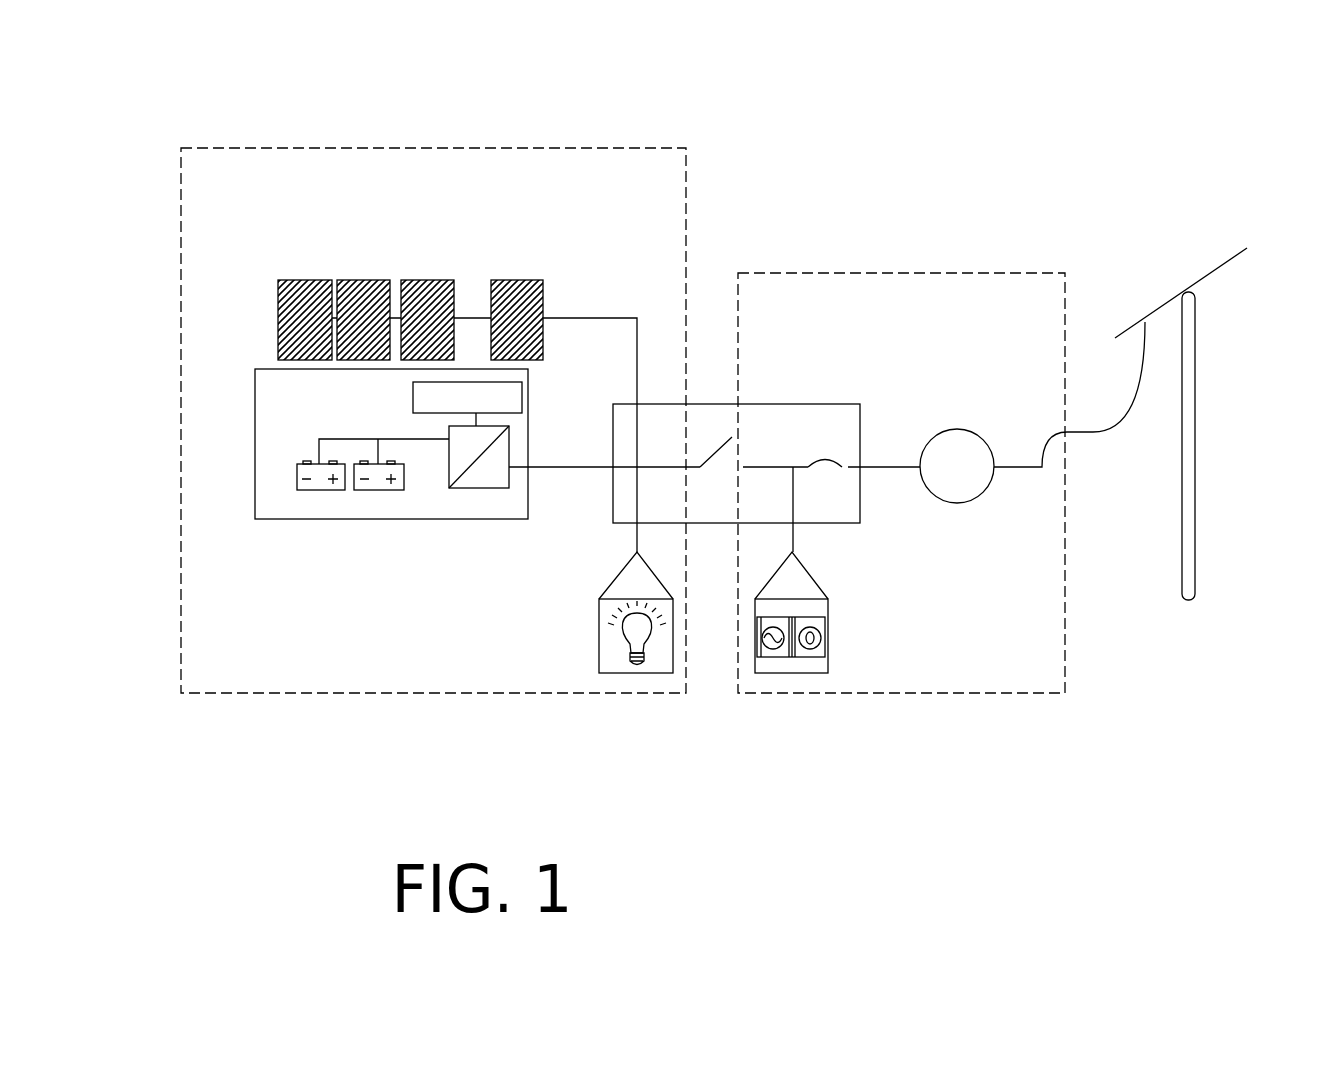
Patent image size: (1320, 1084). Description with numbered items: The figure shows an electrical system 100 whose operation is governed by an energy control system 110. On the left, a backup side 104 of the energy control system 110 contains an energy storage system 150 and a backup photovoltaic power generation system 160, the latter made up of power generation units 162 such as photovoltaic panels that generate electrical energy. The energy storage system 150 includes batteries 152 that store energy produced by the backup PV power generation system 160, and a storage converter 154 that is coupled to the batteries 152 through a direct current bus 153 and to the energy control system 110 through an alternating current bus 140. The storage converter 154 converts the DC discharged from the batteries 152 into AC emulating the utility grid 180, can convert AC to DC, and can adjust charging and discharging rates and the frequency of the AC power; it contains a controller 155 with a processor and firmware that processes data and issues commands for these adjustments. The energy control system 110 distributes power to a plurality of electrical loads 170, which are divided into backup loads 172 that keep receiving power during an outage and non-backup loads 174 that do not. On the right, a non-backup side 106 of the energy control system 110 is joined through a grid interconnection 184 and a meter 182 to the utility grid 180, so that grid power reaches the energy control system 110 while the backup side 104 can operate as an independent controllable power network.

The electrical system 100 is at (981, 184).
The backup side 104 is at (217, 148).
The non-backup side 106 is at (877, 272).
The energy control system 110 is at (748, 404).
The alternating current (AC) bus 140 is at (552, 467).
The energy storage system 150 is at (450, 519).
The battery 152 is at (319, 490).
The direct current (DC) bus 153 is at (337, 439).
The storage converter 154 is at (485, 488).
The controller 155 is at (522, 400).
The backup photovoltaic (PV) power generation system 160 is at (447, 363).
The power generation unit 162 is at (303, 280).
The plurality of electrical loads 170 is at (714, 657).
The backup load 172 is at (612, 578).
The non-backup load 174 is at (826, 610).
The utility grid 180 is at (1154, 272).
The meter 182 is at (960, 428).
The grid interconnection 184 is at (880, 467).